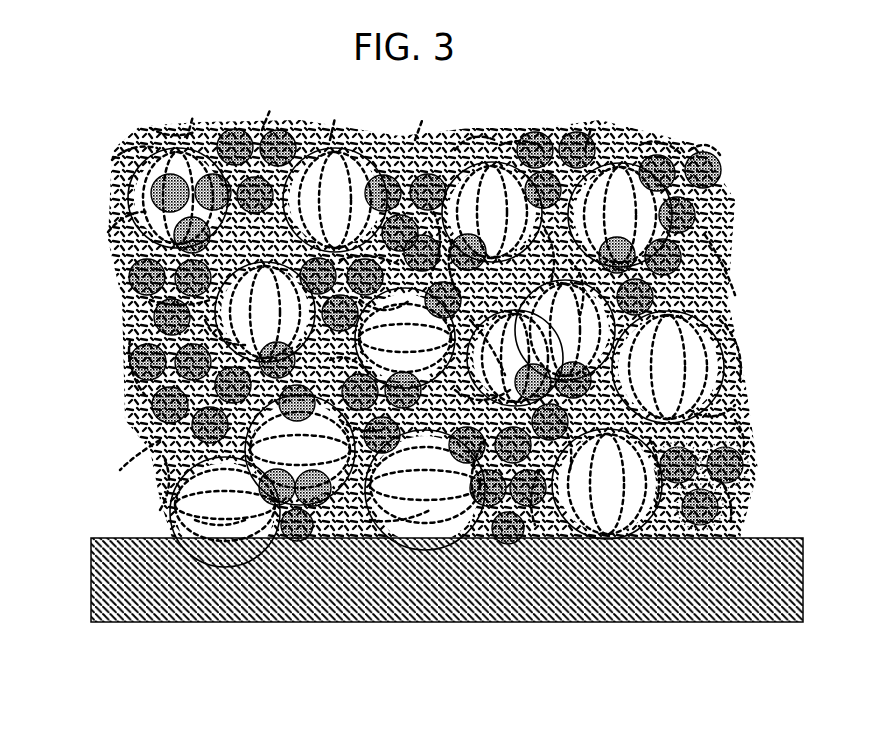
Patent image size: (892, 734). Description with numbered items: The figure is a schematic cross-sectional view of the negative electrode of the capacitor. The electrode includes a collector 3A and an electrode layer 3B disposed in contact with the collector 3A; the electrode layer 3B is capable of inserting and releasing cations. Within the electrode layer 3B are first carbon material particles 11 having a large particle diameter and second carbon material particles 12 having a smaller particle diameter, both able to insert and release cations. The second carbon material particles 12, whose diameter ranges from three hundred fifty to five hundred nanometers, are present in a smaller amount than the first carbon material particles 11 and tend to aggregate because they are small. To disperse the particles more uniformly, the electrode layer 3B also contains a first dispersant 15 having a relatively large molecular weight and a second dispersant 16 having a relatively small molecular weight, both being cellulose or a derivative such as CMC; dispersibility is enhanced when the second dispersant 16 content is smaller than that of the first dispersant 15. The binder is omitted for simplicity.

The collector 3A is at (158, 595).
The electrode layer 3B is at (97, 122).
The first carbon material particles 11 is at (681, 378).
The second carbon material particles 12 is at (733, 439).
The first dispersant 15 is at (716, 237).
The second dispersant 16 is at (753, 462).